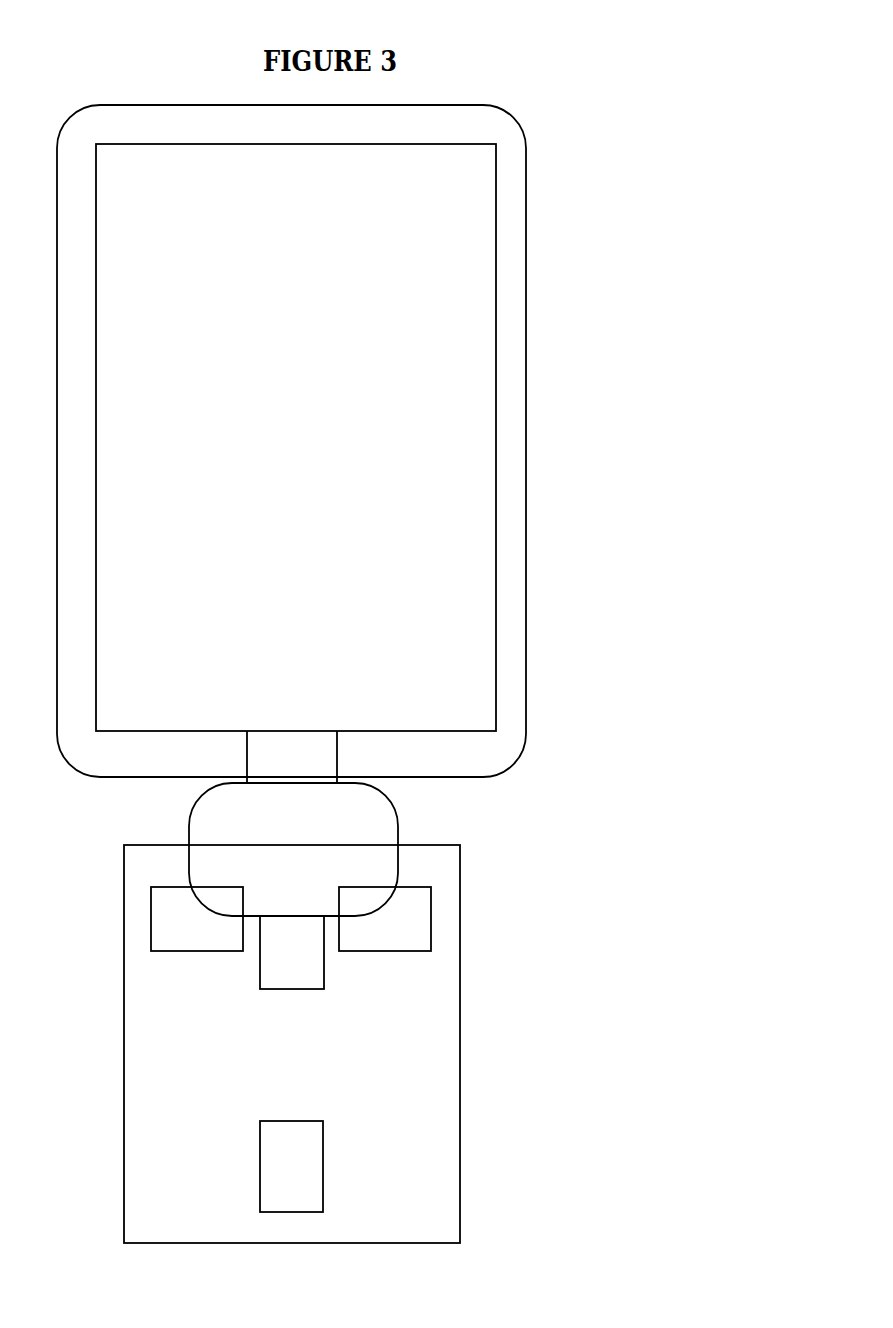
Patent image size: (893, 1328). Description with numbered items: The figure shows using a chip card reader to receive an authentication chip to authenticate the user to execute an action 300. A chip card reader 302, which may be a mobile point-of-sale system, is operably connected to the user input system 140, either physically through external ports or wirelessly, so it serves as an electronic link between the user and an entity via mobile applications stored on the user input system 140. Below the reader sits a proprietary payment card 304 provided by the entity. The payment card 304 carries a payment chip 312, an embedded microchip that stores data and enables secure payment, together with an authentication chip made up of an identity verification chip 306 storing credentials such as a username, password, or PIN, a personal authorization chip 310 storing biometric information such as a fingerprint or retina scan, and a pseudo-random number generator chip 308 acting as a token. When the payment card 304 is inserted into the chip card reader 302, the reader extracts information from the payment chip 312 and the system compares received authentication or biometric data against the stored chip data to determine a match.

The using a chip card reader to receive an authentication chip to authenticate the u 300 is at (619, 68).
The user input system 140 is at (507, 423).
The chip card reader 302 is at (338, 838).
The payment card 304 is at (433, 1102).
The identity verification chip 306 is at (413, 923).
The pseudo-random number generator chip 308 is at (190, 917).
The personal authorization chip 310 is at (283, 961).
The payment chip 312 is at (295, 1195).